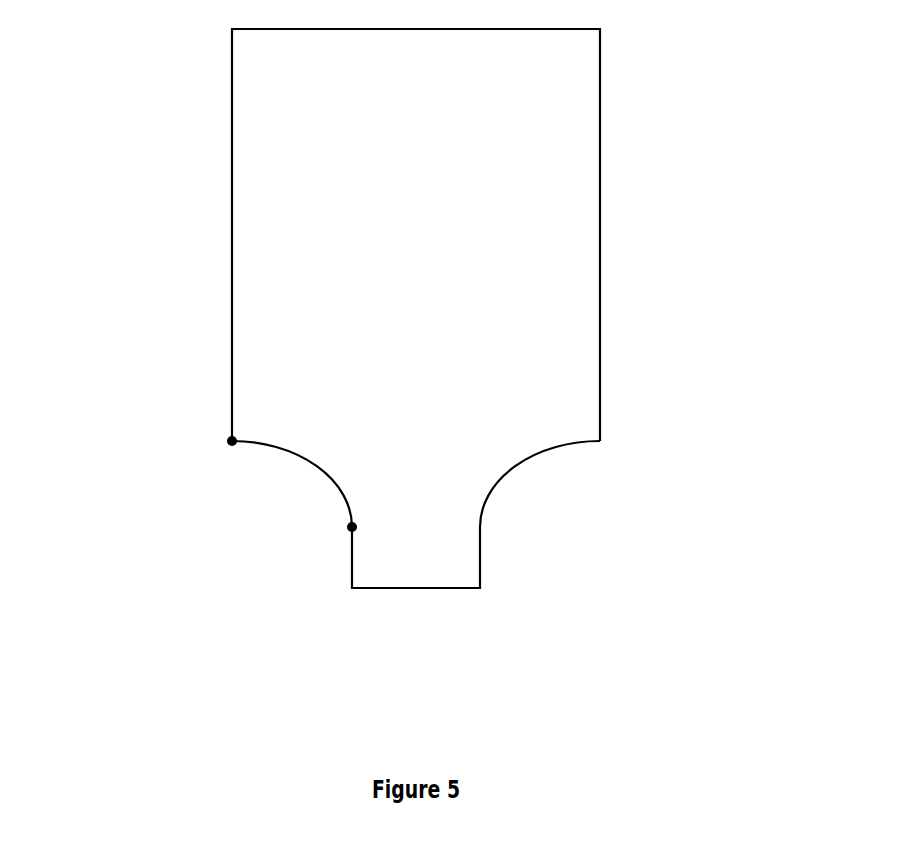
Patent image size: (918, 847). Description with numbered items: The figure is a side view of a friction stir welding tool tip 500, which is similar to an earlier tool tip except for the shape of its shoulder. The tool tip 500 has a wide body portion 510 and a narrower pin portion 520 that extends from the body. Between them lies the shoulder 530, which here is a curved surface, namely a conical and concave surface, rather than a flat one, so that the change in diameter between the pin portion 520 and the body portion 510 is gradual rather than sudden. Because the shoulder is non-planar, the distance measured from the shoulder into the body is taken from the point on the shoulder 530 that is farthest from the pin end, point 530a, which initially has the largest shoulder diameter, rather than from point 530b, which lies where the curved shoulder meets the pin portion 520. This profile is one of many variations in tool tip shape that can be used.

The tool tip 500 is at (713, 112).
The body portion 510 is at (232, 263).
The pin portion 520 is at (392, 590).
The shoulder 530 is at (307, 468).
The point on shoulder farthest from pin end 530a is at (228, 443).
The point on shoulder nearest pin 530b is at (348, 529).